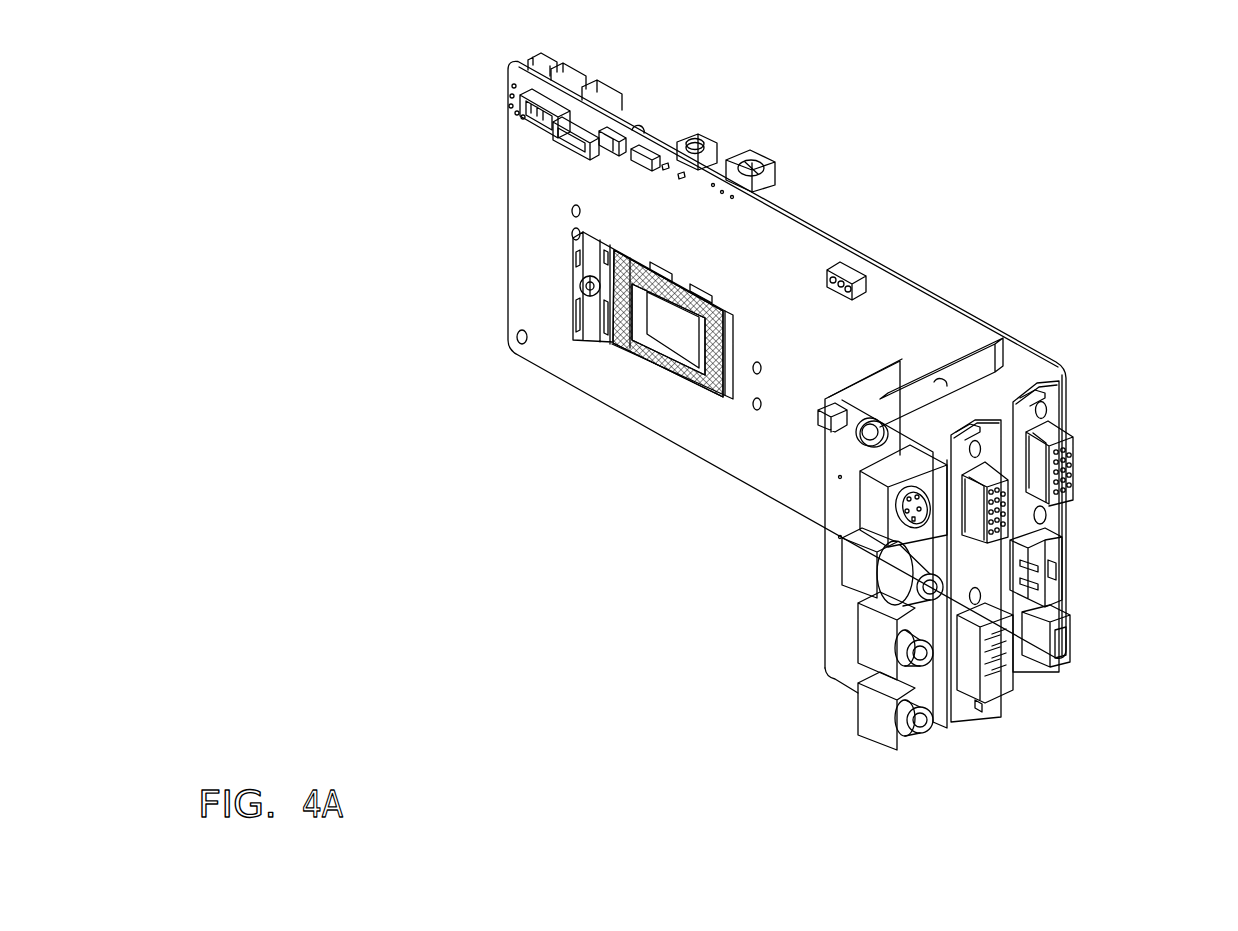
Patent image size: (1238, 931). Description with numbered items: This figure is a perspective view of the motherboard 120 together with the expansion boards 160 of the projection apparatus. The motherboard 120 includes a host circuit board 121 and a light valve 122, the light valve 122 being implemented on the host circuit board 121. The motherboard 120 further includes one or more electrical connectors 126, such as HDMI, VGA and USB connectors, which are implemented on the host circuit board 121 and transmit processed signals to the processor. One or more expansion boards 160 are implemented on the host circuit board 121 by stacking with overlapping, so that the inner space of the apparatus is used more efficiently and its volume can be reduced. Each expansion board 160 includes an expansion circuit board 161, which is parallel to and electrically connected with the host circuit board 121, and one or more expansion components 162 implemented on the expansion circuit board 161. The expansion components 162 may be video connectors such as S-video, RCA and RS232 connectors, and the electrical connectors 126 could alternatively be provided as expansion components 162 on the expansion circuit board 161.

The motherboard 120 is at (1106, 390).
The host circuit board 121 is at (918, 290).
The light valve 122 is at (678, 333).
The electrical connector 126 is at (1057, 411).
The expansion board 160 is at (1000, 717).
The expansion circuit board 161 is at (898, 380).
The expansion component 162 is at (875, 715).